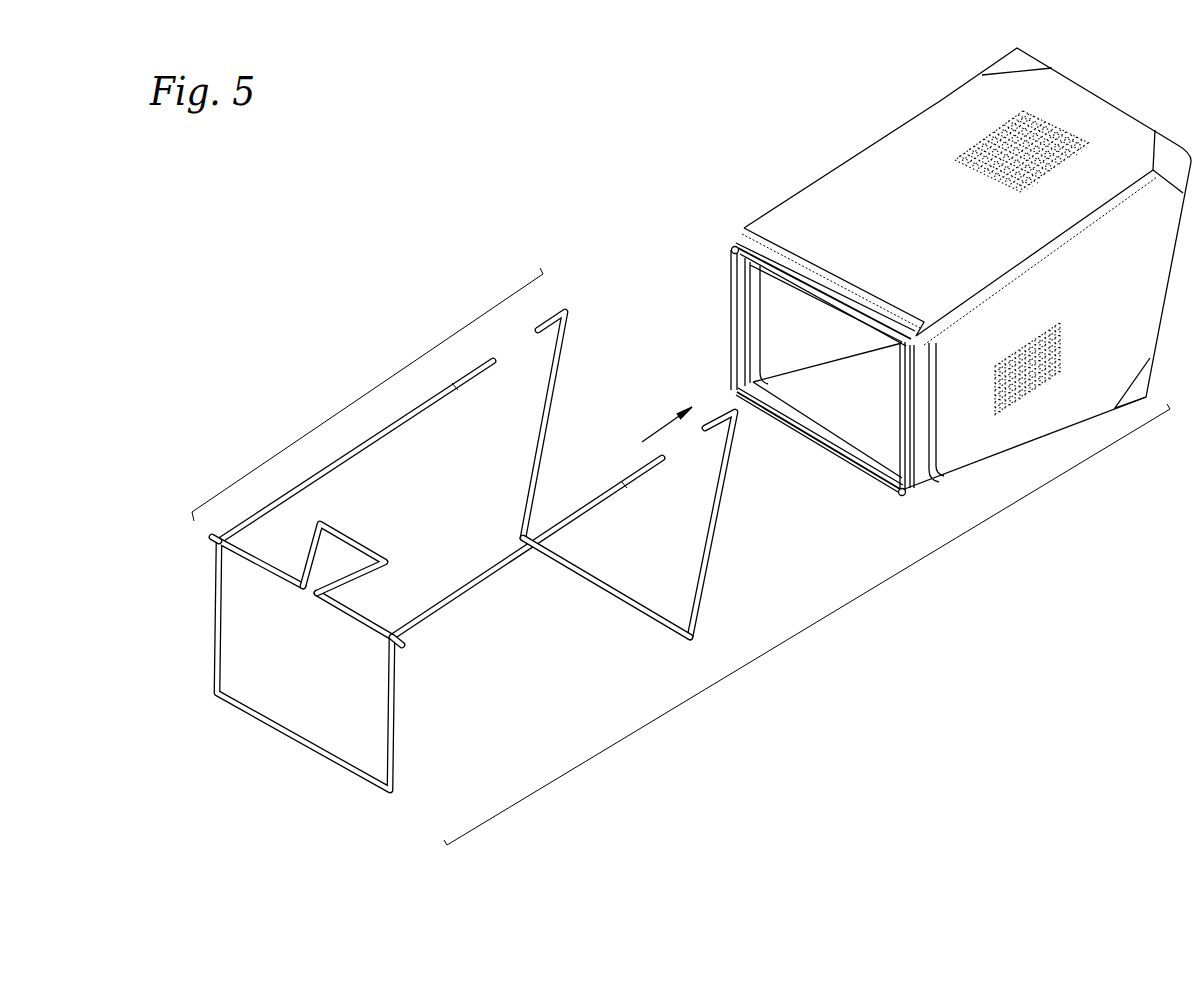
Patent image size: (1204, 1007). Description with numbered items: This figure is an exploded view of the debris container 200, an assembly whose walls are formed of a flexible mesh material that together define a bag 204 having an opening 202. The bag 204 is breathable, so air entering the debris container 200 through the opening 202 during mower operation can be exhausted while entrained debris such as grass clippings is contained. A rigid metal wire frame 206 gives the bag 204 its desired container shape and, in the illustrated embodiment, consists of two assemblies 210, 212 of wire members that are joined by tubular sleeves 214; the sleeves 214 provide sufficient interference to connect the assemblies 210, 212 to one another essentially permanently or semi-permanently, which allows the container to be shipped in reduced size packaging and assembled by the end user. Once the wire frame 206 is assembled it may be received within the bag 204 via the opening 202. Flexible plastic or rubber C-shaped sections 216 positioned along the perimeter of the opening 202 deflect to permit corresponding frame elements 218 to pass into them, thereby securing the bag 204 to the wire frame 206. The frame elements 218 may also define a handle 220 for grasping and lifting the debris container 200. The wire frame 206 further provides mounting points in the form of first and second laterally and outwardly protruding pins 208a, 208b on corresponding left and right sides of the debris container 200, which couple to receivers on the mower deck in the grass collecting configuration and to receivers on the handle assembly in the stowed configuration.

The debris container 200 is at (823, 625).
The opening 202 is at (780, 342).
The bag 204 is at (847, 196).
The wire frame 206 is at (353, 398).
The first pin 208a is at (402, 646).
The second pin 208b is at (211, 541).
The first assembly 210 is at (567, 348).
The second assembly 212 is at (467, 600).
The tubular sleeve 214 is at (470, 382).
The C-shaped section 216 is at (735, 247).
The frame element 218 is at (255, 566).
The handle 220 is at (347, 533).